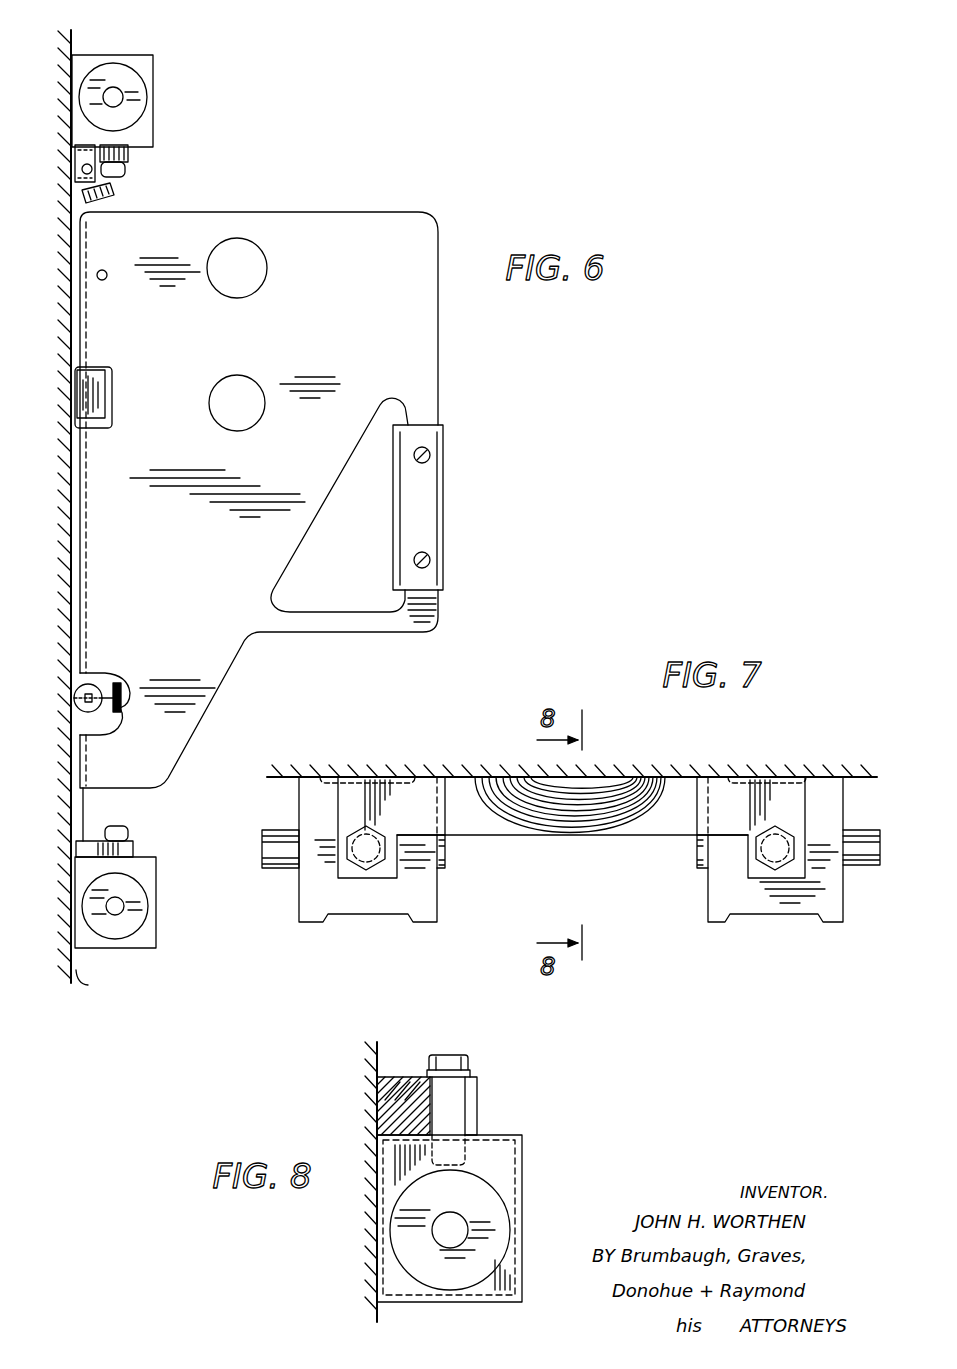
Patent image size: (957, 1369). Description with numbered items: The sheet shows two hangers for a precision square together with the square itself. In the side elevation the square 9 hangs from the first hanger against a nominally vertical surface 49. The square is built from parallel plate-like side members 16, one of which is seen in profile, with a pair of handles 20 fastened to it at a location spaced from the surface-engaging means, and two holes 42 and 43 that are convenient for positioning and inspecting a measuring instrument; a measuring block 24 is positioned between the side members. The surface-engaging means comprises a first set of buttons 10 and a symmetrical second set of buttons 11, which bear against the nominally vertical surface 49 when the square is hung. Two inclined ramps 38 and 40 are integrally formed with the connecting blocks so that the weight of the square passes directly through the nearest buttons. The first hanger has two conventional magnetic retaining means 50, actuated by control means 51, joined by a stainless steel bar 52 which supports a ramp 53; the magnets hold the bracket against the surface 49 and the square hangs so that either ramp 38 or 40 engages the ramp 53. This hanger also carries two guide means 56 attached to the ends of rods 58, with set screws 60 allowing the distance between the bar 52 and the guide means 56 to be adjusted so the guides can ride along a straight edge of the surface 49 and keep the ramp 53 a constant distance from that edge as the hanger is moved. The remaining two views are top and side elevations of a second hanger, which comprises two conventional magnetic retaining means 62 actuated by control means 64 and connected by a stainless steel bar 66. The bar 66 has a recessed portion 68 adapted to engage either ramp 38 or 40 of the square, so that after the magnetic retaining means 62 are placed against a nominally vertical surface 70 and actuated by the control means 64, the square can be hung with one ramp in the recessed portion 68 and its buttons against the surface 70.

In FIG. 6, the square 9 is at (250, 184).
In FIG. 6, the first set of buttons 10 is at (70, 330).
In FIG. 6, the second set of buttons 11 is at (73, 768).
In FIG. 6, the side member 16 is at (326, 213).
In FIG. 6, the handle 20 is at (446, 478).
In FIG. 6, the measuring block 24 is at (237, 292).
In FIG. 6, the inclined ramp 38 is at (95, 372).
In FIG. 6, the inclined ramp 40 is at (98, 732).
In FIG. 6, the hole 42 is at (252, 257).
In FIG. 6, the hole 43 is at (258, 405).
In FIG. 6, the nominally vertical surface 49 is at (94, 995).
In FIG. 6, the magnetic retaining means 50 is at (148, 73).
In FIG. 6, the control means 51 is at (112, 90).
In FIG. 6, the stainless steel bar 52 is at (84, 820).
In FIG. 6, the ramp 53 is at (80, 388).
In FIG. 6, the guide means 56 is at (74, 160).
In FIG. 6, the rod 58 is at (84, 170).
In FIG. 6, the set screw 60 is at (115, 196).
In FIG. 7, the magnetic retaining means 62 is at (420, 897).
In FIG. 8, the magnetic retaining means 62 is at (500, 1147).
In FIG. 7, the control means 64 is at (280, 862).
In FIG. 8, the control means 64 is at (456, 1218).
In FIG. 7, the stainless steel bar 66 is at (660, 836).
In FIG. 8, the stainless steel bar 66 is at (428, 1092).
In FIG. 7, the recessed portion 68 is at (572, 815).
In FIG. 8, the recessed portion 68 is at (405, 1090).
In FIG. 7, the nominally vertical surface 70 is at (281, 778).
In FIG. 8, the nominally vertical surface 70 is at (381, 1046).